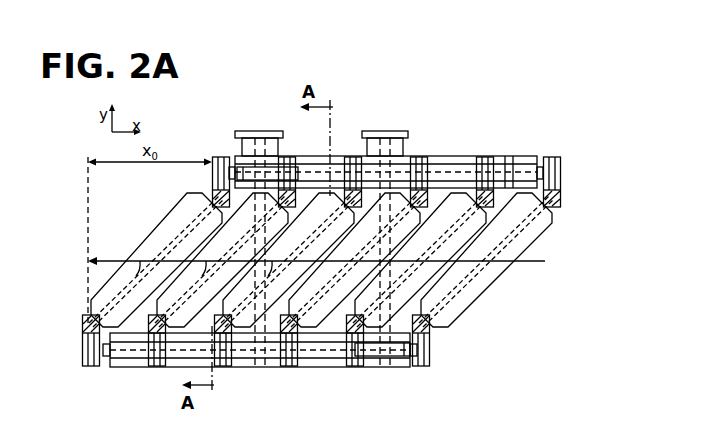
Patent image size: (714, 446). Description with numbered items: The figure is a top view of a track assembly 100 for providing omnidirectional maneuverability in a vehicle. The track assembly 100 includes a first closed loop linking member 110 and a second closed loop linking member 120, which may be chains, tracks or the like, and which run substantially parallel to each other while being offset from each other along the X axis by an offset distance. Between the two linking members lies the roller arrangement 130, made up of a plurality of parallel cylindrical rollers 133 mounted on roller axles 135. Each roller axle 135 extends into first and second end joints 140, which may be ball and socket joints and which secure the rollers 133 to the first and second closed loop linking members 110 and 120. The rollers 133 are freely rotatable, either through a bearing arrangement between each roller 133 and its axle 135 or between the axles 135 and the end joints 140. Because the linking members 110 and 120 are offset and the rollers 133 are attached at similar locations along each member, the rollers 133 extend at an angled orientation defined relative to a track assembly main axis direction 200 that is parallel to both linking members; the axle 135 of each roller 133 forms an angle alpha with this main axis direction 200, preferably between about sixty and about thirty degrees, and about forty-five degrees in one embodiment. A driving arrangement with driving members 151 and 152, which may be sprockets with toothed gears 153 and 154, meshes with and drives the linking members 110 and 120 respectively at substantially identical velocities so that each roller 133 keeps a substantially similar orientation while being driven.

The track assembly 100 is at (292, 400).
The first closed loop linking member 110 is at (343, 363).
The second closed loop linking member 120 is at (458, 157).
The roller arrangement 130 is at (321, 247).
The roller 133 is at (187, 212).
The roller axle 135 is at (556, 212).
The end joint 140 is at (324, 261).
The driving member 151 is at (395, 133).
The driving member 152 is at (247, 131).
The toothed gear 153 is at (393, 354).
The toothed gear 154 is at (283, 164).
The track assembly main axis direction 200 is at (316, 252).